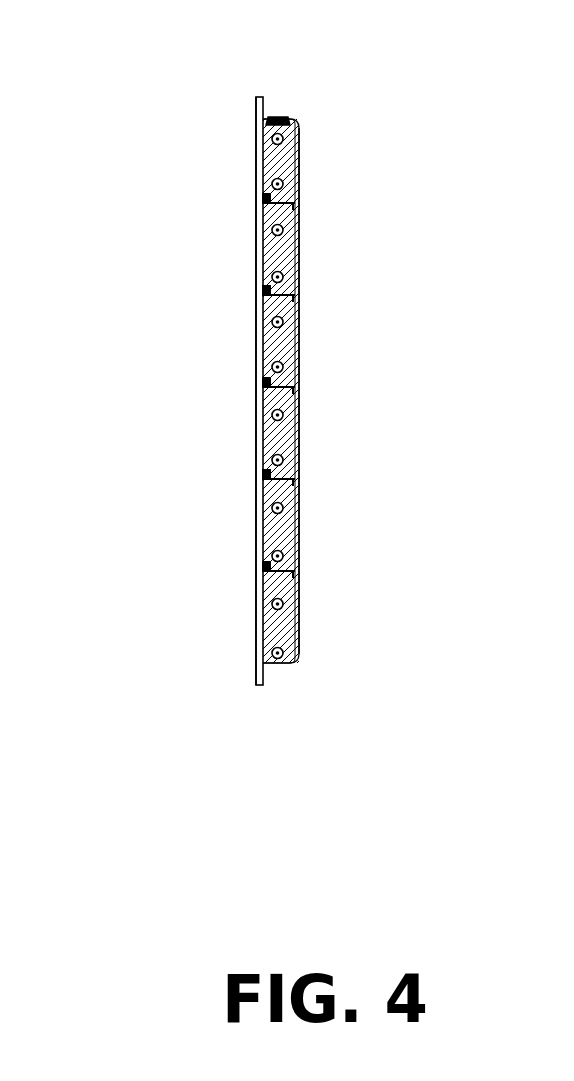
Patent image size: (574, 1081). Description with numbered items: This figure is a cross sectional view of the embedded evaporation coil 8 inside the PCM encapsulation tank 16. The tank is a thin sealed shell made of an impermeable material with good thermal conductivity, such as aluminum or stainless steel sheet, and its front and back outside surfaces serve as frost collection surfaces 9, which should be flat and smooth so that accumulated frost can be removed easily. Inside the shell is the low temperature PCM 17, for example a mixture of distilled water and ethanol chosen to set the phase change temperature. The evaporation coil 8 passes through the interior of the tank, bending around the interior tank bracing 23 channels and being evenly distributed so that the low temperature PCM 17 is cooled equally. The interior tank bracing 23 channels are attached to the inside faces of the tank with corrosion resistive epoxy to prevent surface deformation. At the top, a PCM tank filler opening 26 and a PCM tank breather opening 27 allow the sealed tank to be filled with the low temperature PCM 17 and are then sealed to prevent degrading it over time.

The PCM encapsulation tank 16 is at (259, 97).
The PCM tank filler opening 26 is at (334, 79).
The PCM tank breather opening 27 is at (282, 117).
The frost collection surfaces 9 is at (256, 270).
The low temperature PCM 17 is at (256, 434).
The evaporation coil 8 is at (257, 550).
The interior tank bracing 23 is at (300, 565).